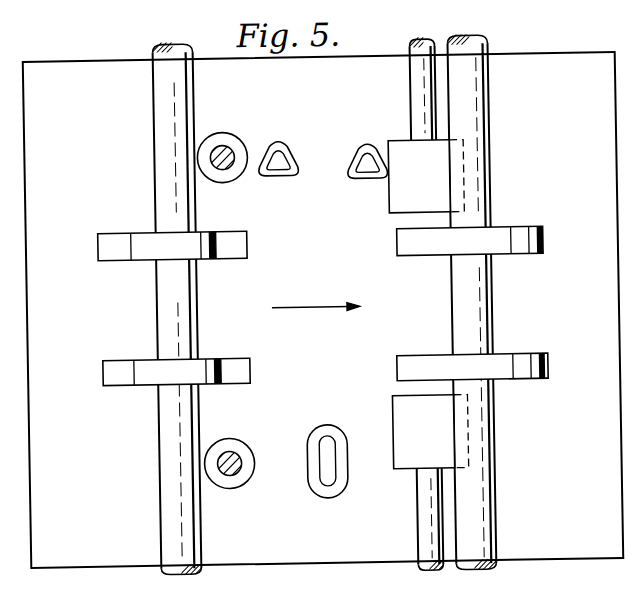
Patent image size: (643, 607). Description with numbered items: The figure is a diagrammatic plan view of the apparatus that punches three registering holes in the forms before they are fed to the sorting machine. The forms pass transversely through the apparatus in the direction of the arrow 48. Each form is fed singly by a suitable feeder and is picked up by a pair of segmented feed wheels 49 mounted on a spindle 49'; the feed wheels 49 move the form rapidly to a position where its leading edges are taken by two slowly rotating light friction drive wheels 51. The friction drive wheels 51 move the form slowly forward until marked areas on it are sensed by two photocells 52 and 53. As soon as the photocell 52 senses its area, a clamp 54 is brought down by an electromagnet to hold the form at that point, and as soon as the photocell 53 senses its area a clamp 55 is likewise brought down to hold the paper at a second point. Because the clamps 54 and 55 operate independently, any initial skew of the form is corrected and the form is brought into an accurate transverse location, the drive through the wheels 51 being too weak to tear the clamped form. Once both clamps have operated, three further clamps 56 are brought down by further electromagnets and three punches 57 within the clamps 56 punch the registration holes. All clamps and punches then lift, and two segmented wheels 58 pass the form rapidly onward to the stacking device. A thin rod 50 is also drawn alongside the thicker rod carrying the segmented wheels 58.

The arrow 48 is at (321, 305).
The segmented feed wheels 49 is at (323, 306).
The spindle 49' is at (152, 309).
The thin guide rod 50 is at (428, 303).
The light friction drive wheels 51 is at (428, 304).
The photocell 52 is at (232, 452).
The photocell 53 is at (230, 166).
The clamp 54 is at (233, 474).
The clamp 55 is at (224, 132).
The clamps 56 is at (351, 170).
The punches 57 is at (284, 164).
The segmented wheels 58 is at (529, 258).